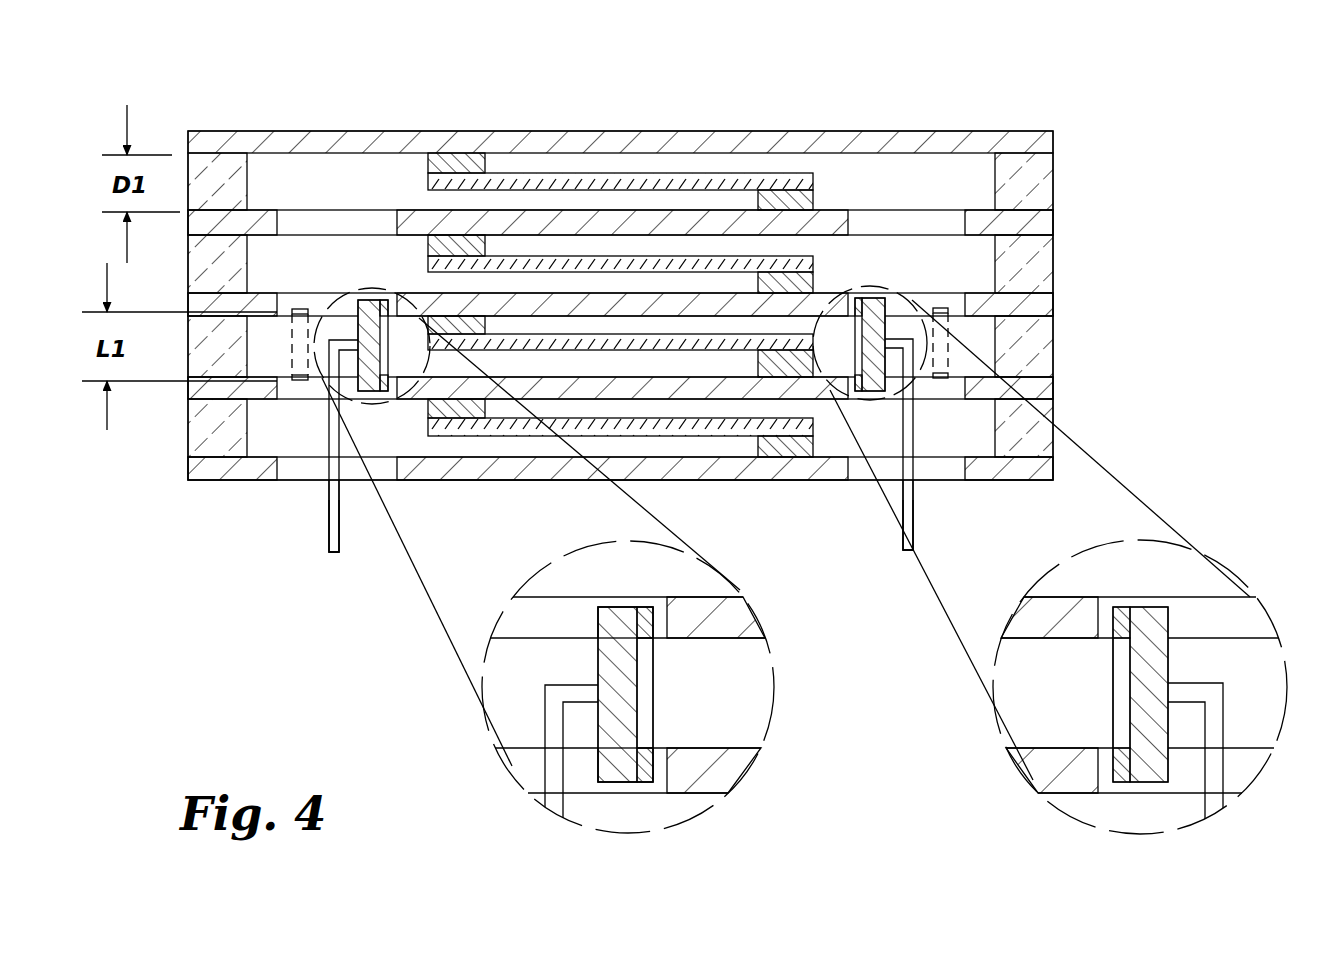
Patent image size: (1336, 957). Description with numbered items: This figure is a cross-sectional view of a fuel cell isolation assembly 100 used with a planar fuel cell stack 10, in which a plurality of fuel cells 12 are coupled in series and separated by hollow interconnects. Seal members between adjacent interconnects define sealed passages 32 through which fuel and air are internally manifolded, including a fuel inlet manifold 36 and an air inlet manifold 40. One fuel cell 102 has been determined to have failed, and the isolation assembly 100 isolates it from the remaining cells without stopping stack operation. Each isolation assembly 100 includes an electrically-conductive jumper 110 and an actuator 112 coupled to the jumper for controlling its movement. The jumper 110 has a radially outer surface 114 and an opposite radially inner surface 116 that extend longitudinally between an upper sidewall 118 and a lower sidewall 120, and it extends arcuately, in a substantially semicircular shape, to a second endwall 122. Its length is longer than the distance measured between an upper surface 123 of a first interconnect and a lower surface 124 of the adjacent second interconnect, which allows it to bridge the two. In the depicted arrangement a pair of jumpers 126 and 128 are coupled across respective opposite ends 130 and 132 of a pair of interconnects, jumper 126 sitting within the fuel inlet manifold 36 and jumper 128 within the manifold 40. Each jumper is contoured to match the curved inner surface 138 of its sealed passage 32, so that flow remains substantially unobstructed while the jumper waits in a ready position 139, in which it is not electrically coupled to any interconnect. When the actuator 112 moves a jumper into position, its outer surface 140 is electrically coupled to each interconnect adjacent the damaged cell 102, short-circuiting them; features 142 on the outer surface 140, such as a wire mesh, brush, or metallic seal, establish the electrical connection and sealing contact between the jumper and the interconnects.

The fuel cell stack 10 is at (188, 114).
The fuel cells 12 is at (816, 180).
The sealed passages 32 is at (353, 506).
The fuel inlet manifold 36 is at (308, 178).
The air inlet manifold 40 is at (958, 165).
The fuel cell isolation assembly 100 is at (268, 570).
The failed fuel cell 102 is at (820, 262).
The jumper 110 is at (1168, 627).
The actuator 112 is at (330, 512).
The radially outer surface 114 is at (545, 684).
The radially inner surface 116 is at (656, 680).
The upper sidewall 118 is at (625, 607).
The lower sidewall 120 is at (620, 783).
The second endwall 122 is at (605, 653).
The upper surface of first interconnect 123 is at (563, 293).
The lower surface of second interconnect 124 is at (628, 233).
The jumper 126 is at (577, 663).
The jumper 128 is at (1117, 680).
The first end of interconnects 130 is at (398, 180).
The second end of interconnects 132 is at (818, 163).
The inner surface of sealed passage 138 is at (1107, 778).
The ready position 139 is at (297, 387).
The jumper outer surface 140 is at (640, 660).
The external surface features 142 is at (1117, 748).